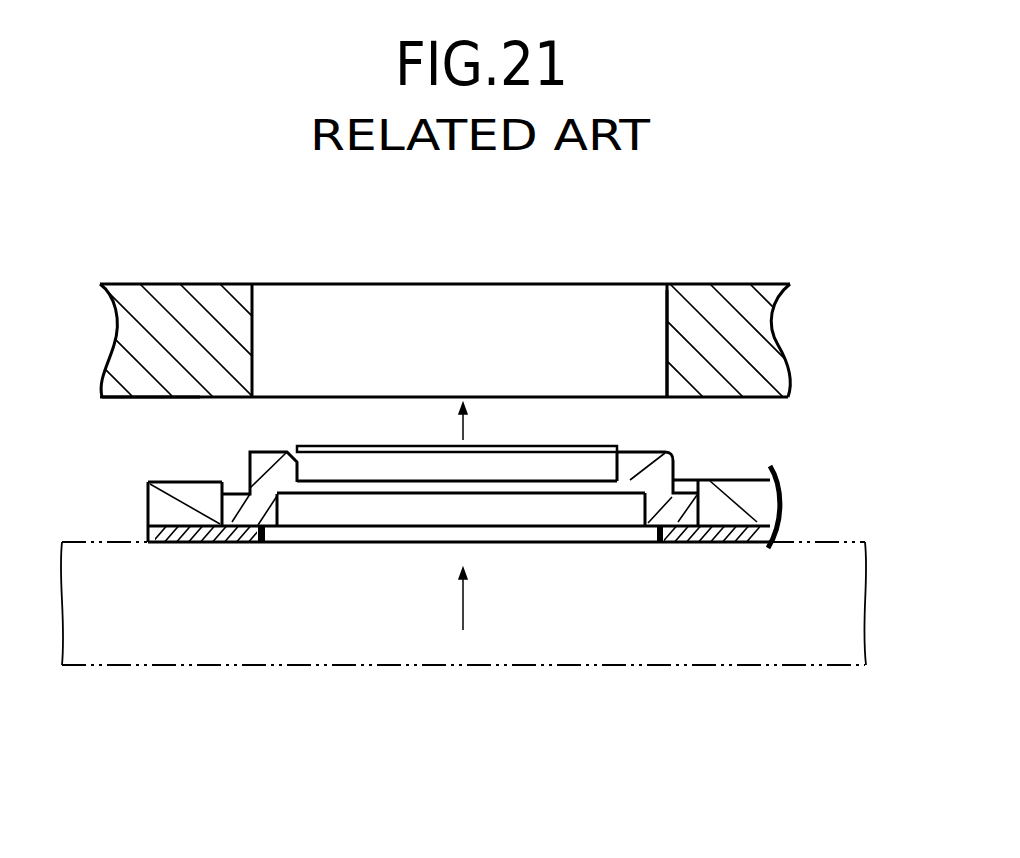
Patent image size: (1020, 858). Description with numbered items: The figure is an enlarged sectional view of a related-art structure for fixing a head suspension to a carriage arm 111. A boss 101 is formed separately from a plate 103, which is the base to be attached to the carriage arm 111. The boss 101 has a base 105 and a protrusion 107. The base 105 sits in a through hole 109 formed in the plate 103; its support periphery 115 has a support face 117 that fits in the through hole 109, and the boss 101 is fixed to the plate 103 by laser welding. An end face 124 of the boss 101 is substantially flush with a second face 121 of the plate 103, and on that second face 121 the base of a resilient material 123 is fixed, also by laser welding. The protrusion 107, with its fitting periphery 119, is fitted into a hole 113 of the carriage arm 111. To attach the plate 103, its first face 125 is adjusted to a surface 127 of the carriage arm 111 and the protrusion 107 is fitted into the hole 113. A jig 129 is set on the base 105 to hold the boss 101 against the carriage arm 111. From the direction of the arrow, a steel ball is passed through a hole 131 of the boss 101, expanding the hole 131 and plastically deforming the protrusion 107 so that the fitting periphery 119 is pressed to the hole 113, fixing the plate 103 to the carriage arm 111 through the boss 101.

The boss 101 is at (562, 527).
The plate 103 is at (722, 479).
The base 105 is at (651, 510).
The protrusion 107 is at (642, 446).
The through hole 109 is at (684, 476).
The carriage arm 111 is at (752, 284).
The hole 113 is at (665, 312).
The support periphery 115 is at (673, 462).
The support face 117 is at (778, 493).
The fitting periphery 119 is at (244, 474).
The second face 121 is at (155, 542).
The resilient material 123 is at (187, 543).
The end face 124 is at (277, 545).
The first face 125 is at (178, 483).
The surface 127 is at (195, 397).
The jig 129 is at (484, 667).
The hole 131 is at (345, 527).